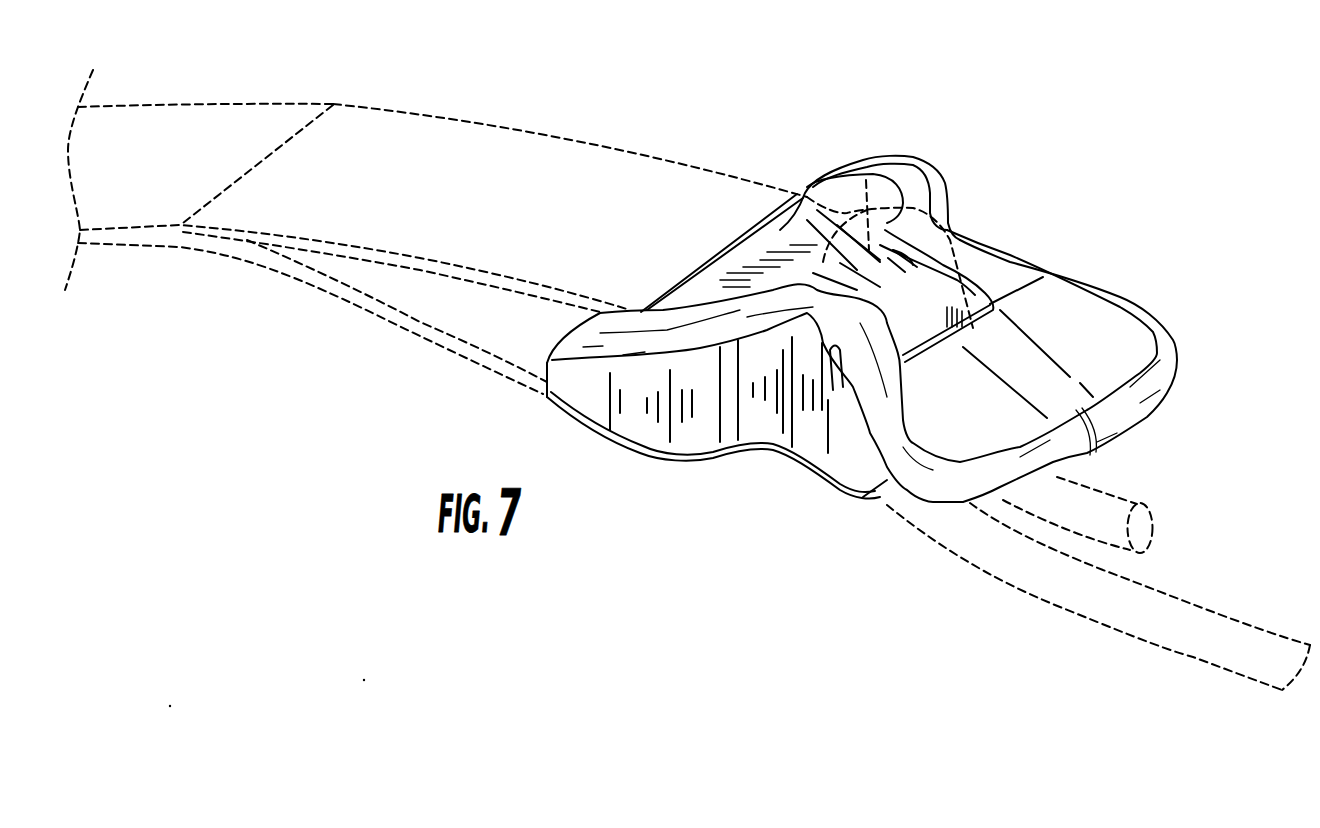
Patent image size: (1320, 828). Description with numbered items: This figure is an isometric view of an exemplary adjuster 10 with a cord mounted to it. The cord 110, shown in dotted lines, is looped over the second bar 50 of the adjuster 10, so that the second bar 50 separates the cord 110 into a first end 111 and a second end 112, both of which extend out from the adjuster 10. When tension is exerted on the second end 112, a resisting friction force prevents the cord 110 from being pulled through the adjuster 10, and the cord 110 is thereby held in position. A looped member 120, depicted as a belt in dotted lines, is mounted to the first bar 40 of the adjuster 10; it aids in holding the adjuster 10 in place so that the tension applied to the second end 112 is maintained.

The adjuster 10 is at (660, 537).
The first bar 40 is at (760, 253).
The second bar 50 is at (836, 296).
The cord 110 is at (1193, 668).
The first end 111 is at (1107, 505).
The second end 112 is at (1027, 577).
The looped member 120 is at (477, 153).